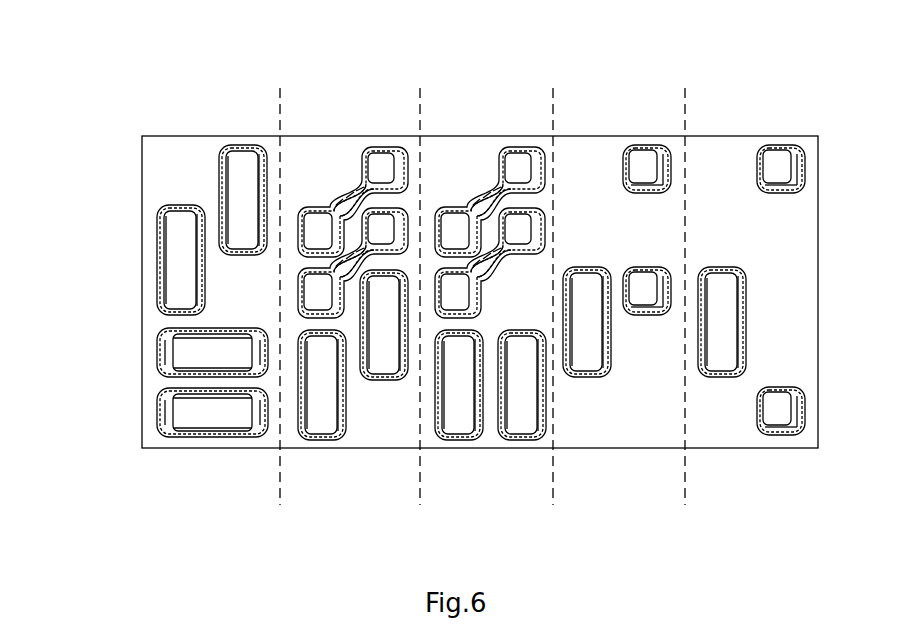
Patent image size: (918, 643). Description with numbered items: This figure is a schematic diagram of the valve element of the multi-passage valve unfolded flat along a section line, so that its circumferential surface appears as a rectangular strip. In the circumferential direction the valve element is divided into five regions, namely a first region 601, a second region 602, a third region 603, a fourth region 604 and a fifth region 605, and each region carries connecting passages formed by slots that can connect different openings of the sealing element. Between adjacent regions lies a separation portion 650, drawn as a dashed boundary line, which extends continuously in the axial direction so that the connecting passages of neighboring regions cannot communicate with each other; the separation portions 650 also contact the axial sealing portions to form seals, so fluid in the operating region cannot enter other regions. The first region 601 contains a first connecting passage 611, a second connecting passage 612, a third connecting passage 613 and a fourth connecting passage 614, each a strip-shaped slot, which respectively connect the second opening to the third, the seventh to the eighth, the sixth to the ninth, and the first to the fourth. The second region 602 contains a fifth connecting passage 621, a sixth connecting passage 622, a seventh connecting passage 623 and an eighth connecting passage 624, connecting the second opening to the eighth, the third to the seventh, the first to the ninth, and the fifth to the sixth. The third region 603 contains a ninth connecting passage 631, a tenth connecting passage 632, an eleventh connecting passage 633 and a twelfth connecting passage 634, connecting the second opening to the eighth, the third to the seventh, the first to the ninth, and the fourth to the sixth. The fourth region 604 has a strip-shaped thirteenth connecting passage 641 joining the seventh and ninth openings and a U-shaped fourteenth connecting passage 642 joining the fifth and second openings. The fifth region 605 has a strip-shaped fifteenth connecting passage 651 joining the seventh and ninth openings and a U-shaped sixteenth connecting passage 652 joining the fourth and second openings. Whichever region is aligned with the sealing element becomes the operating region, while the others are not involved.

The first region 601 is at (208, 147).
The second region 602 is at (343, 147).
The third region 603 is at (492, 147).
The fourth region 604 is at (620, 147).
The fifth region 605 is at (750, 147).
The first connecting passage 611 is at (234, 182).
The second connecting passage 612 is at (177, 265).
The third connecting passage 613 is at (182, 353).
The fourth connecting passage 614 is at (180, 413).
The fifth connecting passage 621 is at (334, 218).
The sixth connecting passage 622 is at (381, 222).
The seventh connecting passage 623 is at (314, 425).
The eighth connecting passage 624 is at (378, 358).
The ninth connecting passage 631 is at (470, 222).
The tenth connecting passage 632 is at (525, 225).
The eleventh connecting passage 633 is at (465, 418).
The twelfth connecting passage 634 is at (522, 418).
The thirteenth connecting passage 641 is at (587, 357).
The fourteenth connecting passage 642 is at (640, 298).
The fifteenth connecting passage 651 is at (718, 270).
The sixteenth connecting passage 652 is at (780, 397).
The separation portion 650 is at (271, 445).